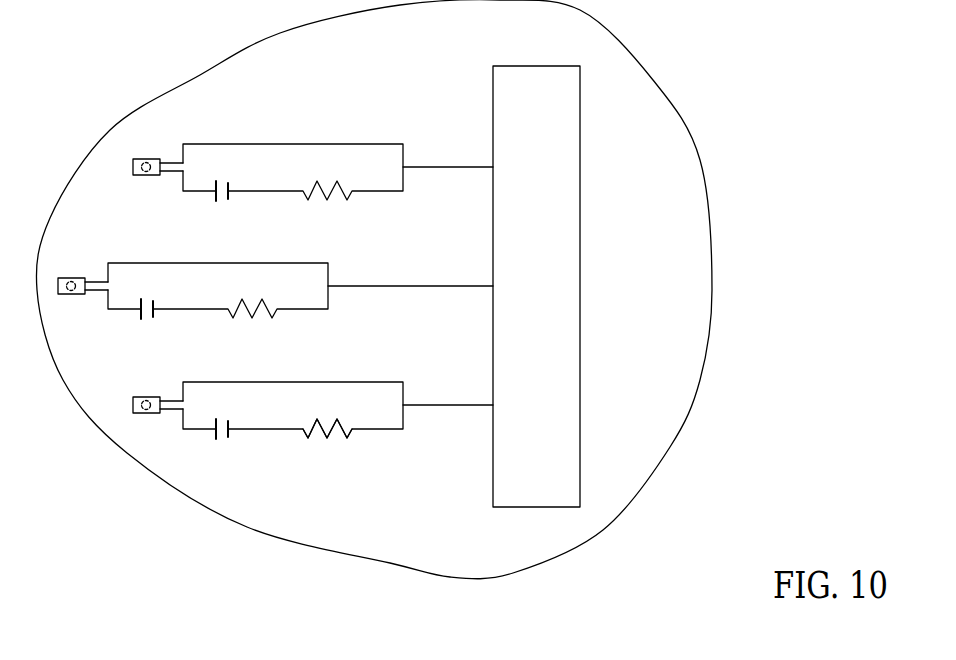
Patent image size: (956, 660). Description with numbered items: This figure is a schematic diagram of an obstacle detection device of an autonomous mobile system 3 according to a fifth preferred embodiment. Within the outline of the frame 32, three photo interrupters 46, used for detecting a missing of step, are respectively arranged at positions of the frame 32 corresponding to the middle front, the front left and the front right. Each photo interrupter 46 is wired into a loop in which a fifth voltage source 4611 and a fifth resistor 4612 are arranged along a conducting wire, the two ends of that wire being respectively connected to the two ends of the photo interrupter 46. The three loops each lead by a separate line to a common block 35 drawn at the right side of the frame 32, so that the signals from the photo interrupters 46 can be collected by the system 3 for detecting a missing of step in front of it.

The electronic device 3 is at (429, 311).
The frame 32 is at (710, 325).
The control unit 35 is at (580, 238).
The photo interrupter 46 is at (141, 414).
The fifth voltage source 4611 is at (220, 440).
The fifth resistor 4612 is at (343, 433).